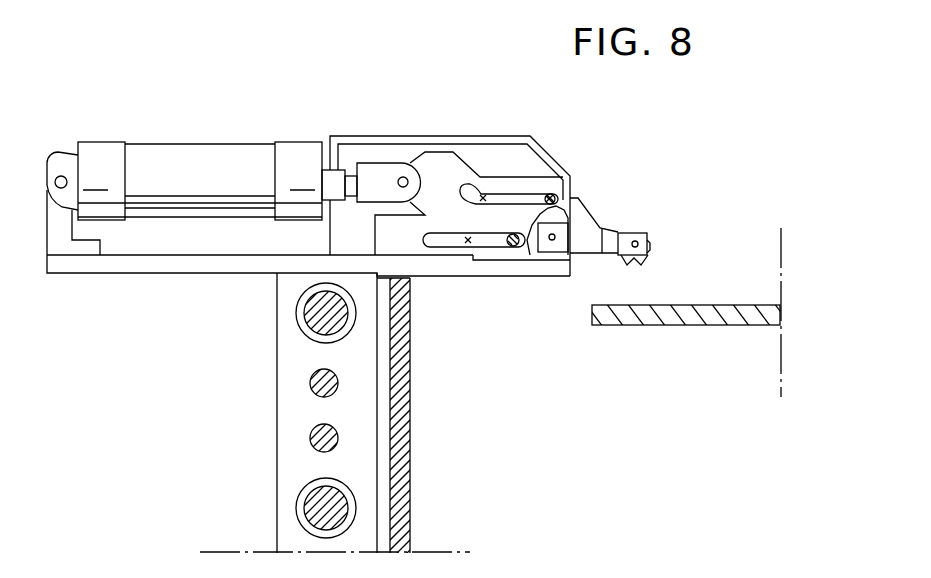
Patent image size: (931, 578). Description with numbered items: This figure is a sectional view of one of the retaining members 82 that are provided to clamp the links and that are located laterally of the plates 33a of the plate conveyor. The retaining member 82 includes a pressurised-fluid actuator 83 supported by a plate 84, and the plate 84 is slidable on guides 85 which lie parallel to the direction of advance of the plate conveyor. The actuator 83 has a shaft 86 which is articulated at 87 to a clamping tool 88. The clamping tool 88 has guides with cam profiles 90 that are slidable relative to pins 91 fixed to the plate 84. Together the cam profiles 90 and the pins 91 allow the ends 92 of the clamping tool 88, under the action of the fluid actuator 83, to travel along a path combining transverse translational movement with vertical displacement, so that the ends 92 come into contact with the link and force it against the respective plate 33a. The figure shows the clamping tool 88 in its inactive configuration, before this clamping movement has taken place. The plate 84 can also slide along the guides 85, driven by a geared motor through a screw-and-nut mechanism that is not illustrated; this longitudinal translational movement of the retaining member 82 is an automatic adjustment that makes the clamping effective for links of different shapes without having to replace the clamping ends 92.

The retaining member 82 is at (273, 111).
The pressurised-fluid actuator 83 is at (167, 165).
The plate 84 is at (165, 262).
The guides 85 is at (322, 318).
The shaft 86 is at (349, 168).
The articulation 87 is at (411, 162).
The clamping tool 88 is at (583, 223).
The cam profiles 90 is at (484, 238).
The pins 91 is at (565, 200).
The clamping ends 92 is at (652, 253).
The plate of the plate conveyor 33a is at (652, 316).